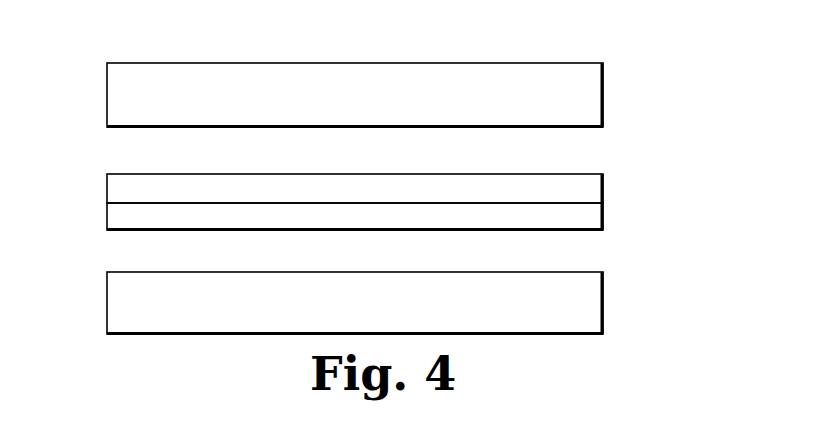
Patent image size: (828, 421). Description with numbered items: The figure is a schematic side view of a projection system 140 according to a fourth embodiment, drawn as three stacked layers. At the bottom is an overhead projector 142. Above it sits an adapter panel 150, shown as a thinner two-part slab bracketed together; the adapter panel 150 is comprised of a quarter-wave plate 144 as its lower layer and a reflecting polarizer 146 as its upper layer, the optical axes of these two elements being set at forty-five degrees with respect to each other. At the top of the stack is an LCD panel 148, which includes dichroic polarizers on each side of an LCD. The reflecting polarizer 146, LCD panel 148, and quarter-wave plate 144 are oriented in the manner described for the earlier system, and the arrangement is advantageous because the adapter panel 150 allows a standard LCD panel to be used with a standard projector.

The projection system 140 is at (623, 69).
The overhead projector 142 is at (573, 301).
The quarter-wave plate 144 is at (568, 213).
The reflecting polarizer 146 is at (590, 187).
The LCD panel 148 is at (573, 100).
The adapter panel 150 is at (101, 172).